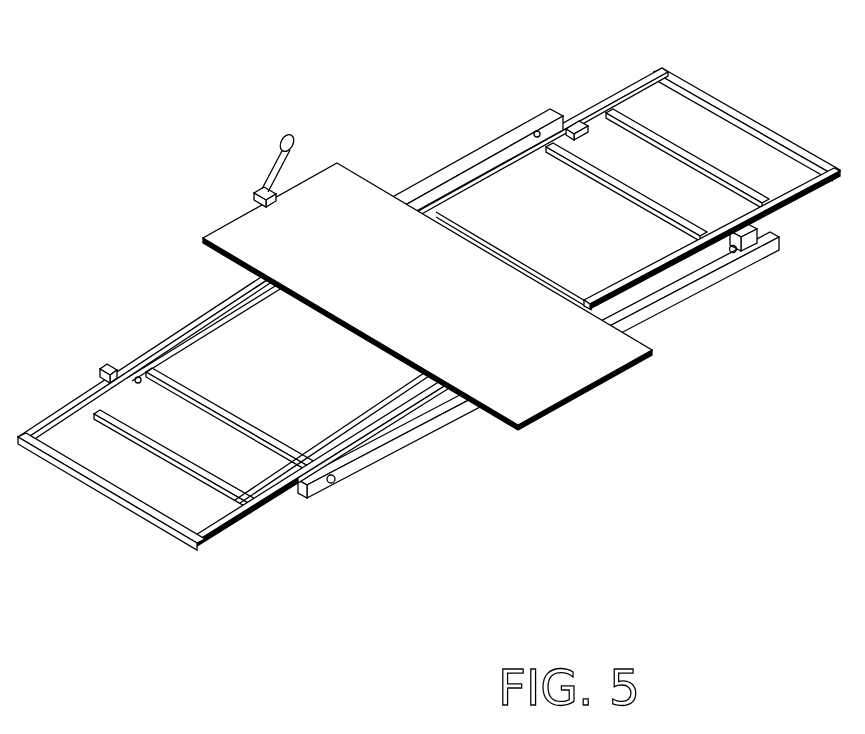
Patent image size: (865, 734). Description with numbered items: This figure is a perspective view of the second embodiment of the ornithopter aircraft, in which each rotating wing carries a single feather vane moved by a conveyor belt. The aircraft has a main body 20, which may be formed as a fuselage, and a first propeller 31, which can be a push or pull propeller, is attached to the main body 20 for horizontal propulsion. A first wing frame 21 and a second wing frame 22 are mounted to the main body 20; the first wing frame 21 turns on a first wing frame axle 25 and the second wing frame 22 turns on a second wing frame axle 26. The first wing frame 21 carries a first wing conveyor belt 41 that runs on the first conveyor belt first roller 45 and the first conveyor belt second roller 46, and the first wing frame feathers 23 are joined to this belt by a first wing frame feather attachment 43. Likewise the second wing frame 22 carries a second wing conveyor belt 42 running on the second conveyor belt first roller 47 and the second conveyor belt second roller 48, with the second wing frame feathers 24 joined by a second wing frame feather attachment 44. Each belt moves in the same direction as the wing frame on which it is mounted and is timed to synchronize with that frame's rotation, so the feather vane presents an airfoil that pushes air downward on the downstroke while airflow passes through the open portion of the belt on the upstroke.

The main body 20 is at (328, 185).
The first wing frame 21 is at (632, 88).
The second wing frame 22 is at (103, 370).
The first wing frame feathers 23 is at (731, 122).
The second wing frame feathers 24 is at (133, 445).
The first wing frame axle 25 is at (740, 248).
The second wing frame axle 26 is at (323, 490).
The first propeller 31 is at (253, 210).
The first wing conveyor belt 41 is at (812, 163).
The second wing conveyor belt 42 is at (367, 427).
The first wing frame feather attachment 43 is at (580, 138).
The second wing frame feather attachment 44 is at (60, 432).
The first conveyor belt first roller 45 is at (663, 67).
The first conveyor belt second roller 46 is at (437, 205).
The second conveyor belt first roller 47 is at (412, 385).
The second conveyor belt second roller 48 is at (193, 548).